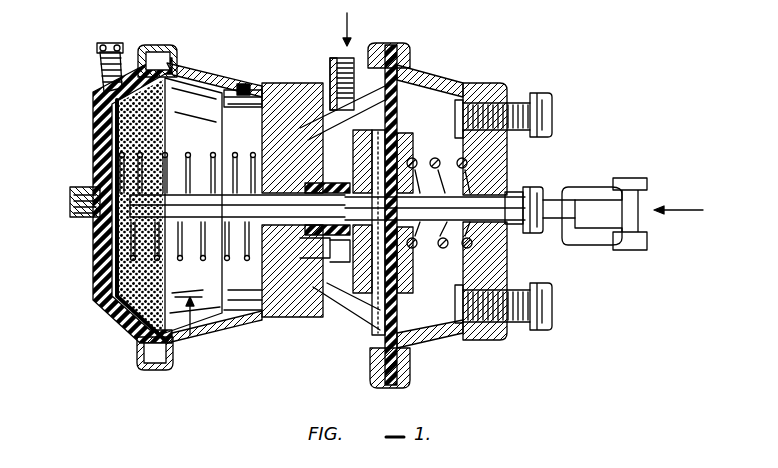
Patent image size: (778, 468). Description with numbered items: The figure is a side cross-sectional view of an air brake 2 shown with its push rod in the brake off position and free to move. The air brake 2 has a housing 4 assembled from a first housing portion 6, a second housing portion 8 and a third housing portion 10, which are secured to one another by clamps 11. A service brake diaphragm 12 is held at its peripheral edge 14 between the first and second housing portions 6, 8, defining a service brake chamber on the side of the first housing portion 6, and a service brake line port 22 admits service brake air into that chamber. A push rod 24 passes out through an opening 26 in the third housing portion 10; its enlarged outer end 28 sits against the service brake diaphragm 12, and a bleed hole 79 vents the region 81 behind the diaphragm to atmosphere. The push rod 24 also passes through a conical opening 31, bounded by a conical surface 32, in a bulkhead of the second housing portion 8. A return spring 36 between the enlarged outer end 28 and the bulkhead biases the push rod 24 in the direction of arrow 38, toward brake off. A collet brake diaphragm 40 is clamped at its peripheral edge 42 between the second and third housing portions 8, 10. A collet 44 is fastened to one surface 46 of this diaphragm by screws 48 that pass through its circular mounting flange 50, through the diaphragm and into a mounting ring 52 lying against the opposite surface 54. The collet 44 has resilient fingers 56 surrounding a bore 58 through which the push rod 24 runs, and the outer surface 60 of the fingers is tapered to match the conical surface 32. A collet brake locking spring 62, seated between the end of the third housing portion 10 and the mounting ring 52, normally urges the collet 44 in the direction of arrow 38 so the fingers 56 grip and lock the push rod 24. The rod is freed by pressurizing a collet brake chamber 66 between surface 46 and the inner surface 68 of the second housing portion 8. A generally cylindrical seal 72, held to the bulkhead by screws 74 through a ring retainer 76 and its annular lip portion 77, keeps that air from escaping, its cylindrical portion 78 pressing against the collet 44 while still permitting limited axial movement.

The air brake 2 is at (64, 131).
The housing 4 is at (424, 55).
The first housing portion 6 is at (135, 335).
The second housing portion 8 is at (285, 305).
The third housing portion 10 is at (420, 335).
The clamps 11 is at (166, 48).
The service brake diaphragm 12 is at (110, 98).
The peripheral edge 14 is at (162, 53).
The service brake line port 22 is at (70, 203).
The push rod 24 is at (522, 190).
The opening 26 is at (500, 220).
The enlarged outer end 28 is at (117, 245).
The conical opening 31 is at (245, 332).
The conical surface 32 is at (276, 333).
The return spring 36 is at (203, 152).
The arrow 38 is at (684, 210).
The collet brake diaphragm 40 is at (400, 98).
The peripheral edge 42 is at (388, 62).
The collet 44 is at (272, 190).
The surface 46 is at (336, 68).
The screws 48 is at (300, 318).
The circular mounting flange 50 is at (372, 157).
The mounting ring 52 is at (406, 145).
The surface 54 is at (400, 305).
The resilient fingers 56 is at (247, 212).
The bore 58 is at (455, 206).
The outer surface 60 is at (262, 142).
The collet brake locking spring 62 is at (465, 150).
The collet brake chamber 66 is at (360, 280).
The inner surface 68 is at (372, 335).
The seal 72 is at (324, 243).
The screws 74 is at (337, 124).
The ring retainer 76 is at (306, 128).
The annular lip portion 77 is at (318, 258).
The cylindrical portion 78 is at (313, 182).
The bleed hole 79 is at (240, 85).
The region 81 is at (190, 340).